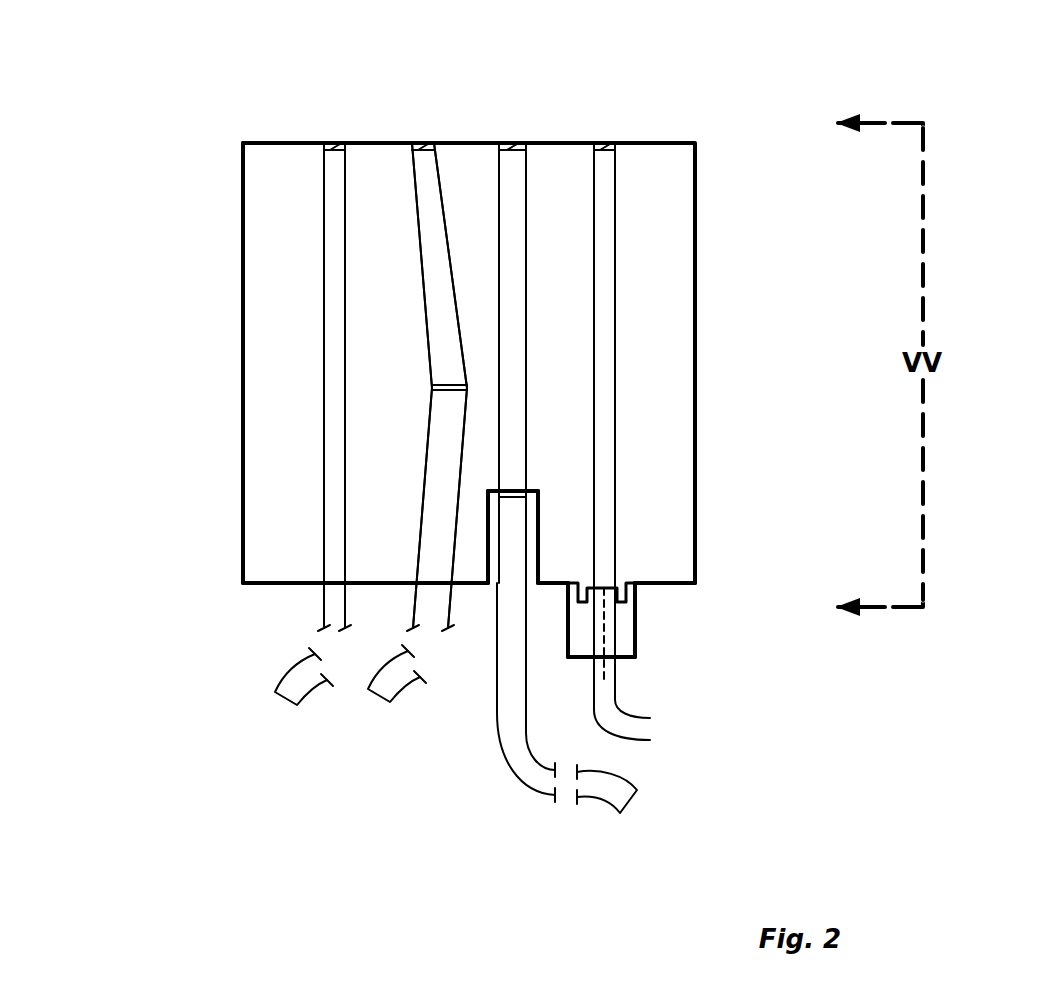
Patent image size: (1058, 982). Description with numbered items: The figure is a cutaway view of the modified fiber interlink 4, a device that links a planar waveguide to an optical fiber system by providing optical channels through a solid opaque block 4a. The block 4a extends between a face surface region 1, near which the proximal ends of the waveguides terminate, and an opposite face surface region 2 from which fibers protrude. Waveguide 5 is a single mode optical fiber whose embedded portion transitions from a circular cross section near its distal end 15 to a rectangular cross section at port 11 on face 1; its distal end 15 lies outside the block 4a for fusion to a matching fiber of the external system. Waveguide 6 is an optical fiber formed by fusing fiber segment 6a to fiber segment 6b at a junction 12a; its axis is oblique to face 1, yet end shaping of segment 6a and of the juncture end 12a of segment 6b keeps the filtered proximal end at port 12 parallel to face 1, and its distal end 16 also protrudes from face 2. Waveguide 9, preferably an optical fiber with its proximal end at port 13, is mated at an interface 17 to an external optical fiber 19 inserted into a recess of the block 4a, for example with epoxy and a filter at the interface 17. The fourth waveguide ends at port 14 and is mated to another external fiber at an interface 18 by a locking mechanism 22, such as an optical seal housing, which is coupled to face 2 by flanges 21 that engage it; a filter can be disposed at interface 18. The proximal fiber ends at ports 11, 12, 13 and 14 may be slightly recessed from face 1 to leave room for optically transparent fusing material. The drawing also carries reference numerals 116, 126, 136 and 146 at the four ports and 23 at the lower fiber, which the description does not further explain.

The face surface region 1 is at (255, 140).
The face surface region 2 is at (675, 588).
The interlink 4 is at (488, 557).
The block 4a is at (277, 430).
The waveguide 5 is at (335, 485).
The waveguide 6 is at (435, 455).
The fiber segment 6a is at (443, 351).
The fiber segment 6b is at (432, 527).
The waveguide 9 is at (518, 397).
The port 11 is at (333, 143).
The port 12 is at (422, 143).
The junction 12a is at (443, 382).
The port 13 is at (510, 143).
The port 14 is at (605, 143).
The distal end 15 is at (280, 700).
The distal end 16 is at (387, 698).
The interface 17 is at (517, 485).
The interface 18 is at (598, 592).
The optical fiber 19 is at (512, 718).
The flanges 21 is at (638, 602).
The locking mechanism 22 is at (638, 638).
The connection pipe 23 is at (642, 730).
The inlet seal 116 is at (340, 148).
The inlet seal 126 is at (430, 148).
The inlet seal 136 is at (518, 148).
The inlet seal 146 is at (612, 148).